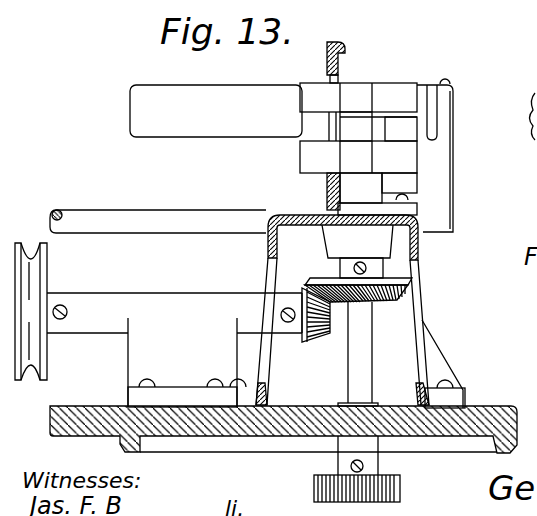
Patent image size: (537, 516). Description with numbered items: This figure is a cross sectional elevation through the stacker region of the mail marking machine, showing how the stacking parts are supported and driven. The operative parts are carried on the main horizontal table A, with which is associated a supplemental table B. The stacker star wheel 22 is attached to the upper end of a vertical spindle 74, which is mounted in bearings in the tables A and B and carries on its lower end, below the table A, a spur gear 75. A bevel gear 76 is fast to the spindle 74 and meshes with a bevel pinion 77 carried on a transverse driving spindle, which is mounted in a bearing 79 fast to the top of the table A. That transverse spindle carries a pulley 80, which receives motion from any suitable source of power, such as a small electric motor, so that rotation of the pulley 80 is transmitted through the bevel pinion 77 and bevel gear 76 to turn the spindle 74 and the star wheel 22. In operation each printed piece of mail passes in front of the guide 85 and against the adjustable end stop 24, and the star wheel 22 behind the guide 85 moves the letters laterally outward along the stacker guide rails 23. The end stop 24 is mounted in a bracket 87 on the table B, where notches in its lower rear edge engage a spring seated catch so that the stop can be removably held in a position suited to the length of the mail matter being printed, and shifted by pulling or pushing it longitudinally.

The stacker star wheel 22 is at (358, 134).
The stacker guide rails 23 is at (163, 222).
The adjustable end stop 24 is at (460, 112).
The vertical spindle 74 is at (357, 382).
The spur gear 75 is at (314, 490).
The bevel gear 76 is at (393, 301).
The bevel pinion 77 is at (313, 341).
The bearing 79 is at (187, 362).
The pulley 80 is at (57, 268).
The guide 85 is at (340, 50).
The bracket 87 is at (430, 182).
The main horizontal table A is at (497, 406).
The supplemental table B is at (418, 249).